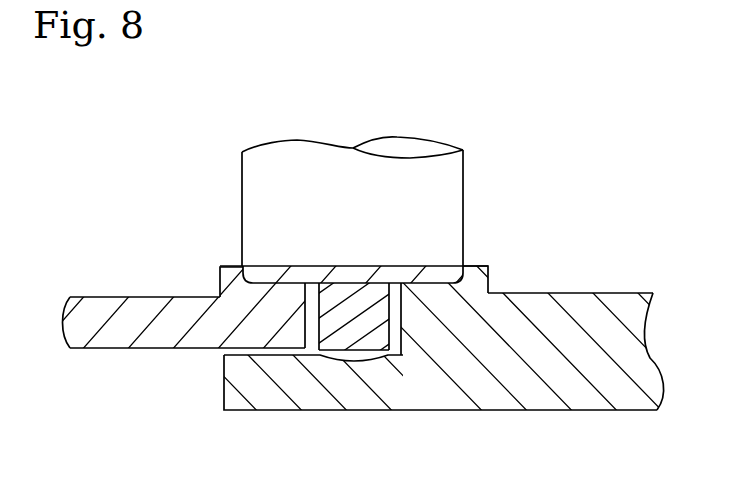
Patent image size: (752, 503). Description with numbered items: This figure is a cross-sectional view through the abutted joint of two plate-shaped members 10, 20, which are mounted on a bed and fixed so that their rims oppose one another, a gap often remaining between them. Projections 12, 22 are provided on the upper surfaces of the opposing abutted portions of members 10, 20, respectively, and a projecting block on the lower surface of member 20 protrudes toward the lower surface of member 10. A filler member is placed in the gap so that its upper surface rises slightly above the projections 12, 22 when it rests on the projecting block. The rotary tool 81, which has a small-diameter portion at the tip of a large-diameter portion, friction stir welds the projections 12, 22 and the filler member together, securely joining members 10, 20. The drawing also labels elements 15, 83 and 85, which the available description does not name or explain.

The plate-shaped member 10 is at (120, 296).
The projection 12 is at (232, 268).
The base plate 15 is at (268, 402).
The plate-shaped member 20 is at (630, 293).
The projection 22 is at (490, 292).
The rotary tool 81 is at (455, 178).
The fastener shank 83 is at (400, 340).
The washer portion 85 is at (472, 268).